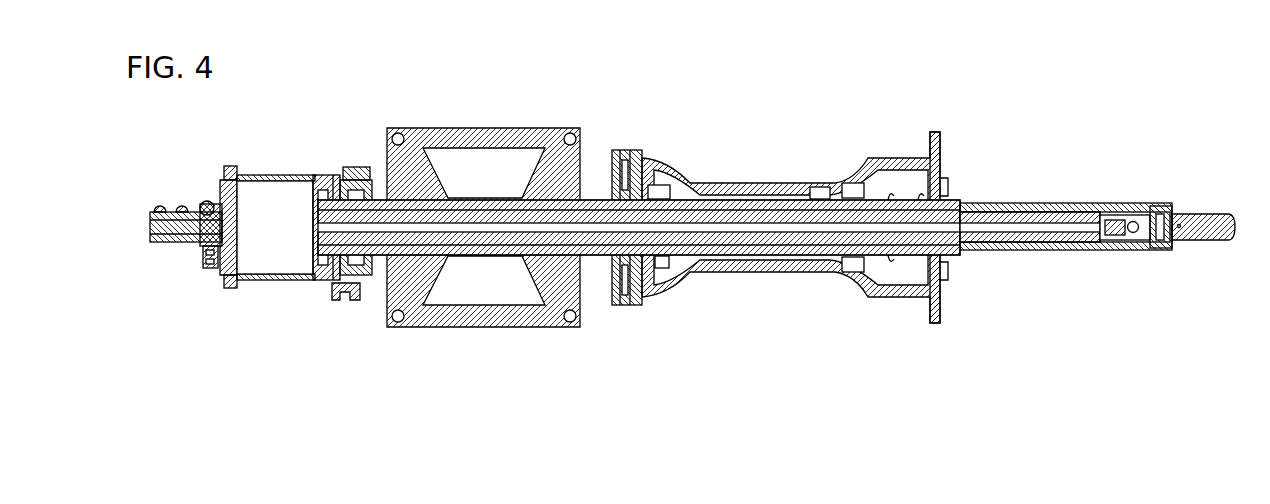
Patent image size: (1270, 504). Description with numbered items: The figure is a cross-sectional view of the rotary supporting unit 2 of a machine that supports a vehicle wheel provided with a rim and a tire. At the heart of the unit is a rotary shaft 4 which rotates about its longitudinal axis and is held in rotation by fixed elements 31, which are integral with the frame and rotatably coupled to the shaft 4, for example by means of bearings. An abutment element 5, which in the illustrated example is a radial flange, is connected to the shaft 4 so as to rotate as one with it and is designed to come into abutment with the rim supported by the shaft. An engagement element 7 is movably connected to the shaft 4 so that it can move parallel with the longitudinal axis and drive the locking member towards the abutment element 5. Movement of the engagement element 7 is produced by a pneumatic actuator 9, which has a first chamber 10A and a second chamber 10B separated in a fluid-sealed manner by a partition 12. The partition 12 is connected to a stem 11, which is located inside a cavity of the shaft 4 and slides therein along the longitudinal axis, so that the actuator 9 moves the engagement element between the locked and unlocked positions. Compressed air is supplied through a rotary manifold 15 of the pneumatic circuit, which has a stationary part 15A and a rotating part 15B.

The rotary supporting unit 2 is at (679, 189).
The rotary shaft 4 is at (768, 183).
The abutment element 5 is at (937, 155).
The engagement element 7 is at (1133, 236).
The pneumatic actuator 9 is at (267, 243).
The first chamber 10A is at (268, 210).
The second chamber 10B is at (348, 167).
The stem 11 is at (748, 228).
The partition 12 is at (330, 282).
The rotary manifold 15 is at (172, 228).
The stationary part 15A is at (150, 214).
The rotating part 15B is at (203, 206).
The fixed elements 31 is at (530, 128).